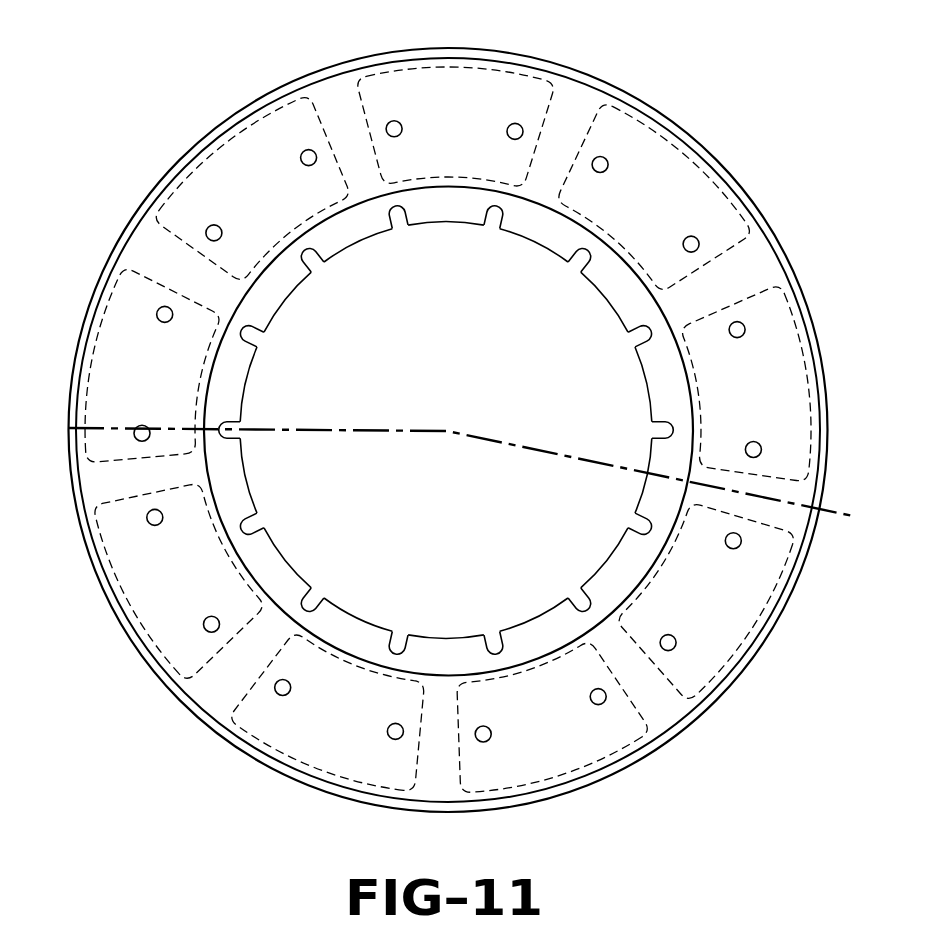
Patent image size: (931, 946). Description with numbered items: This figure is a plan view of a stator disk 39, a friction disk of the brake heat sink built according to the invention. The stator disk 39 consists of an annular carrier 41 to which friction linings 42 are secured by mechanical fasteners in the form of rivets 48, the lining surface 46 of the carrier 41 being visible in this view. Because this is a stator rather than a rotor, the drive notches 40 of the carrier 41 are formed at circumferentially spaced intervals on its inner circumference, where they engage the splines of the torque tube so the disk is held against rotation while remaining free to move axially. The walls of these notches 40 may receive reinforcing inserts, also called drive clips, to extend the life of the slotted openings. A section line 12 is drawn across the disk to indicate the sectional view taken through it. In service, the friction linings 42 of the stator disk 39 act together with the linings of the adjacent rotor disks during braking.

The stator disk 39 is at (192, 148).
The stator disk carrier 41 is at (150, 192).
The friction lining 42 is at (586, 79).
The annular plate surface 46 is at (112, 250).
The drive notch 40 is at (498, 232).
The rivet 48 is at (150, 525).
The section line 12- 12 is at (34, 428).